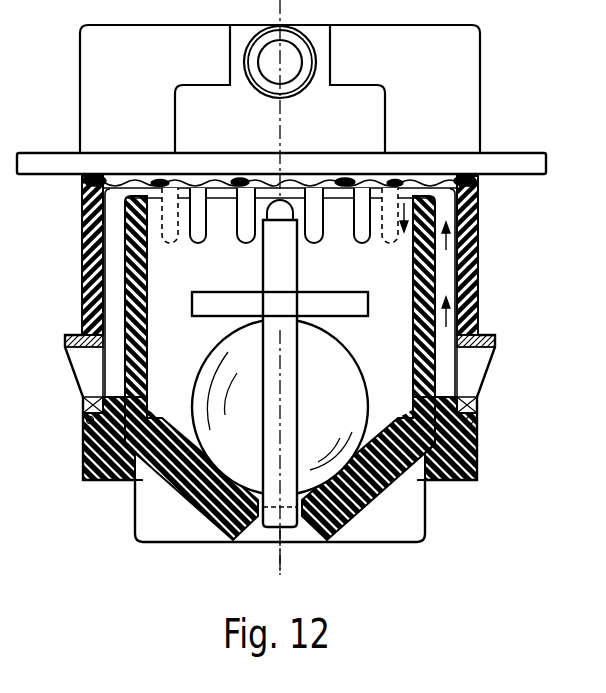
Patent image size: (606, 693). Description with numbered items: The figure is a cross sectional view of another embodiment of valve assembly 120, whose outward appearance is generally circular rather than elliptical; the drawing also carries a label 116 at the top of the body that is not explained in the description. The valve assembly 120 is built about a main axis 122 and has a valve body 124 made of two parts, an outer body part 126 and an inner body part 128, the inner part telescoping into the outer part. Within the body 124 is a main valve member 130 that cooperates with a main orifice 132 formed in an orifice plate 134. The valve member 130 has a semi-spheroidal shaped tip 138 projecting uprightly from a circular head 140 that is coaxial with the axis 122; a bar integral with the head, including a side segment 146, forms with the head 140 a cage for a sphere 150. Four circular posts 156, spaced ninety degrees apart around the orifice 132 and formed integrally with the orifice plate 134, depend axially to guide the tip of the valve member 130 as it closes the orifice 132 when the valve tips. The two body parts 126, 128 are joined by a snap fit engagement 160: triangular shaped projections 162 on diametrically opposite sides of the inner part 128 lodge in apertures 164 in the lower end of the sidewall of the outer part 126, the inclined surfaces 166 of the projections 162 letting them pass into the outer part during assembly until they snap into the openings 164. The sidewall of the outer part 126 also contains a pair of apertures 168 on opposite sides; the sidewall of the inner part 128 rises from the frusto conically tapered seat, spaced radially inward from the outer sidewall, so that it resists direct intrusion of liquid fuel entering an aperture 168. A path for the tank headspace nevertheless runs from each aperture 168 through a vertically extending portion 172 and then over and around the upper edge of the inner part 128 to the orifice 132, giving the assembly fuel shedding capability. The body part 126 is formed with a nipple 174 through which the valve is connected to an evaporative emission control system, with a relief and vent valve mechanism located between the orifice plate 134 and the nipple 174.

The inlet port ring 116 is at (306, 28).
The valve assembly 120 is at (478, 494).
The main axis 122 is at (283, 117).
The valve body 124 is at (478, 200).
The outer body part 126 is at (478, 232).
The inner body part 128 is at (426, 262).
The main valve member 130 is at (292, 284).
The main orifice 132 is at (313, 183).
The orifice plate 134 is at (221, 182).
The semi-spheroidal shaped tip 138 is at (270, 196).
The circular head 140 is at (360, 303).
The side segment 146 is at (273, 363).
The sphere 150 is at (335, 380).
The circular posts 156 is at (248, 243).
The snap fit engagement 160 is at (478, 482).
The triangular shaped projections 162 is at (472, 452).
The apertures 164 is at (462, 376).
The inclined surfaces 166 is at (474, 421).
The apertures 168 is at (481, 360).
The vertically extending portion 172 is at (115, 295).
The nipple 174 is at (440, 191).